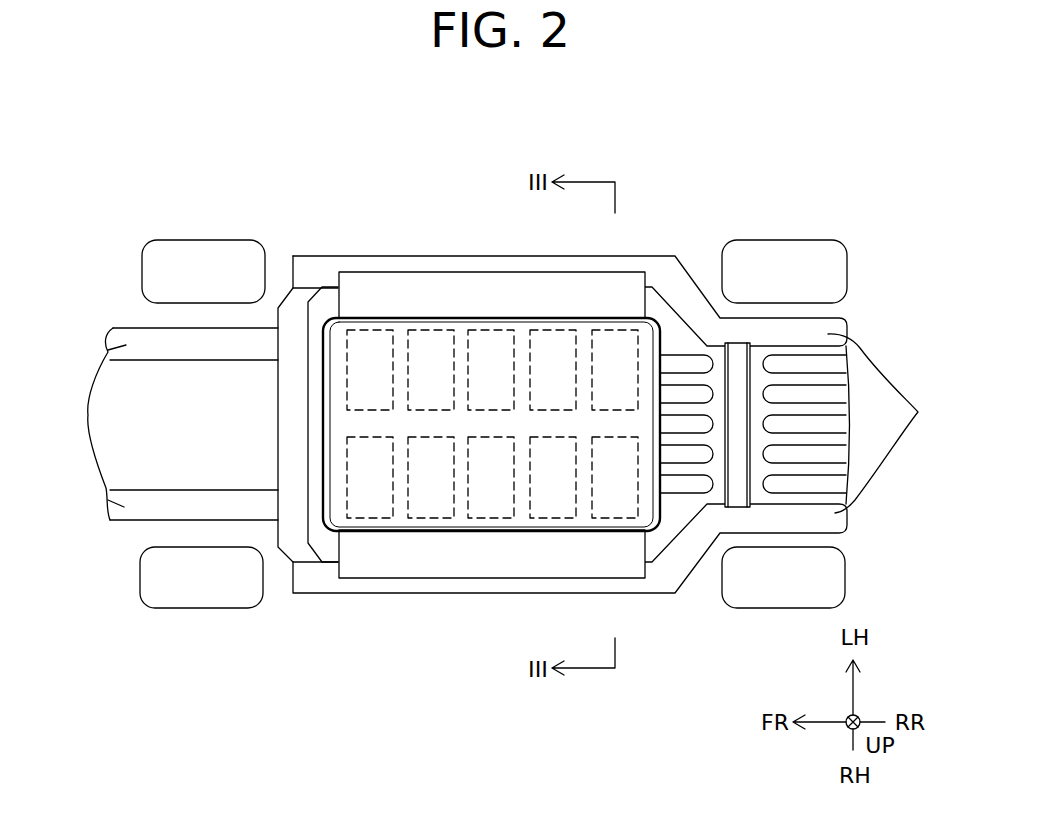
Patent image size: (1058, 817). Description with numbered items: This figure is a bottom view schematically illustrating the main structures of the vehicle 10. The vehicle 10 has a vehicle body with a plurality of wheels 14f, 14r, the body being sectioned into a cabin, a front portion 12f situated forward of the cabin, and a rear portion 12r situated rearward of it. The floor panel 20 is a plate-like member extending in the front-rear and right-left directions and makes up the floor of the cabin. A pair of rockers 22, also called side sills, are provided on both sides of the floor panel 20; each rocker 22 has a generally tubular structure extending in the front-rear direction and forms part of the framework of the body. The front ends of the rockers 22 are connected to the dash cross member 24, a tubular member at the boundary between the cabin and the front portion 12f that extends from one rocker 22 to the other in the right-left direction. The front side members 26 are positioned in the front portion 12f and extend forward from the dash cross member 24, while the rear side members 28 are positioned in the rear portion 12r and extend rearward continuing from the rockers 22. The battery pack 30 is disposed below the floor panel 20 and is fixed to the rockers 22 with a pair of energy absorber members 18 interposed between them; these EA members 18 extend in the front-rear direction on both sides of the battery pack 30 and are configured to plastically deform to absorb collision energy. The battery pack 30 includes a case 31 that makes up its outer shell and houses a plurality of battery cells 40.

The vehicle 10 is at (798, 152).
The front portion 12f is at (104, 303).
The rear portion 12r is at (869, 313).
The wheels 14f is at (168, 250).
The wheels 14r is at (830, 242).
The energy absorber (EA) members 18 is at (408, 285).
The floor panel 20 is at (678, 338).
The rockers 22 is at (315, 263).
The dash cross member 24 is at (287, 305).
The front side members 26 is at (88, 414).
The rear side members 28 is at (918, 412).
The battery pack 30 is at (338, 385).
The case 31 is at (330, 431).
The battery cells 40 is at (494, 330).